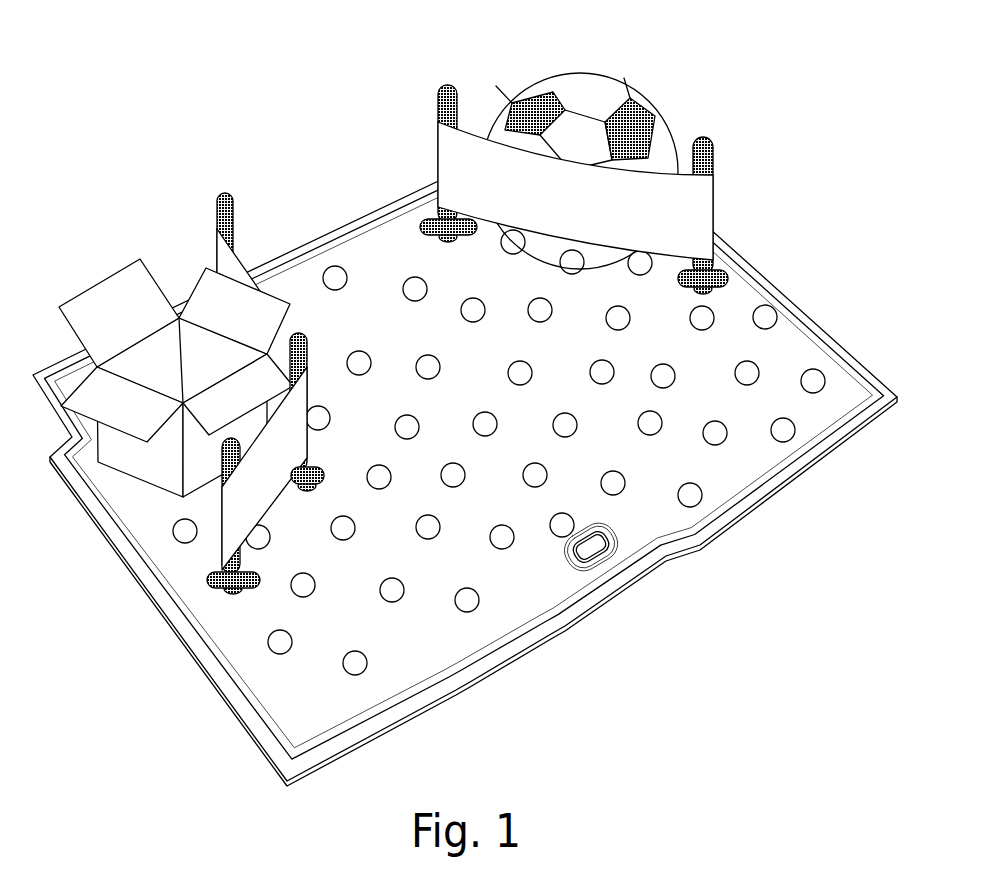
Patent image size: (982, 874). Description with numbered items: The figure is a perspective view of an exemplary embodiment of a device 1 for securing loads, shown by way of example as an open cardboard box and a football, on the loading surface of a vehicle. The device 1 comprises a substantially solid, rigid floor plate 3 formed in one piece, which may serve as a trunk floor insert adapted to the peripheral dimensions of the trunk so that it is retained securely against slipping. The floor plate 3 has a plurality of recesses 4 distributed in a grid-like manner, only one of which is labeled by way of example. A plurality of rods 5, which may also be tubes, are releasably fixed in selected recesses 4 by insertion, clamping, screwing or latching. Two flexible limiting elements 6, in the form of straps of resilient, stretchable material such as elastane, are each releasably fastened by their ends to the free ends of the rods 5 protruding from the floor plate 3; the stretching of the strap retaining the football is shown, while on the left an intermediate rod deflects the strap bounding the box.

The device 1 is at (138, 695).
The floor plate 3 is at (793, 347).
The recess 4 is at (789, 437).
The rod 5 is at (446, 85).
The flexible limiting element 6 is at (703, 200).